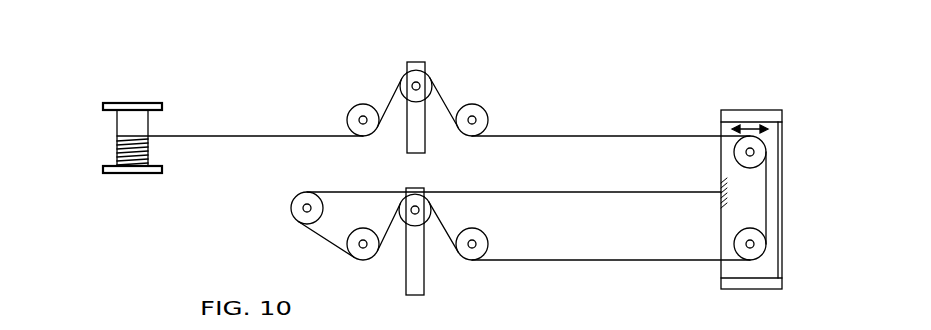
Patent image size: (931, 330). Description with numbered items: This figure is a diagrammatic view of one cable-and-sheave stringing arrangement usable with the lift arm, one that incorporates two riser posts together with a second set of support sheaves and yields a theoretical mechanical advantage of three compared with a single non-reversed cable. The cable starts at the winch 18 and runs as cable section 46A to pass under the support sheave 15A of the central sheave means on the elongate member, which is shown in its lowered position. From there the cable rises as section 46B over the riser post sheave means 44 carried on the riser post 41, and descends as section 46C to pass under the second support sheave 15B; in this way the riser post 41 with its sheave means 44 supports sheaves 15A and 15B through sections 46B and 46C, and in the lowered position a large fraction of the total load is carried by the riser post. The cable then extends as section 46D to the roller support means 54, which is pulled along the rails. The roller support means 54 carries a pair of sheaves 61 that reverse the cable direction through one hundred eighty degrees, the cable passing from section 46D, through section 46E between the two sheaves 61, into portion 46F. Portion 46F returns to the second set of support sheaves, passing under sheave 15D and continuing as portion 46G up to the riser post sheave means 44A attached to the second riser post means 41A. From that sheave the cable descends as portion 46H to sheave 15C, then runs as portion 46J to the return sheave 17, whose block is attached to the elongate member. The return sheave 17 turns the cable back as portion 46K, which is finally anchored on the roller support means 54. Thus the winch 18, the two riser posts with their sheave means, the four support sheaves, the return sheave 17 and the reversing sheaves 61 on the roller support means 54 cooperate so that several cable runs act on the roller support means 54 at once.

The winch 18 is at (128, 116).
The cable section 46A is at (236, 135).
The support sheave 15A is at (352, 124).
The cable section 46B is at (386, 104).
The riser post sheave means 44 is at (425, 84).
The riser post 41 is at (417, 137).
The cable section 46C is at (450, 105).
The support sheave 15B is at (481, 108).
The cable section 46D is at (628, 134).
The roller support means 54 is at (724, 120).
The sheave 61 is at (737, 153).
The cable section 46E is at (768, 204).
The cable portion 46K is at (588, 191).
The return sheave 17 is at (292, 203).
The cable portion 46J is at (318, 239).
The support sheave 15C is at (368, 254).
The cable portion 46H is at (398, 216).
The riser post means 41A is at (417, 276).
The riser post sheave means 44A is at (402, 205).
The cable portion 46G is at (442, 228).
The support sheave 15D is at (479, 242).
The cable portion 46F is at (657, 262).